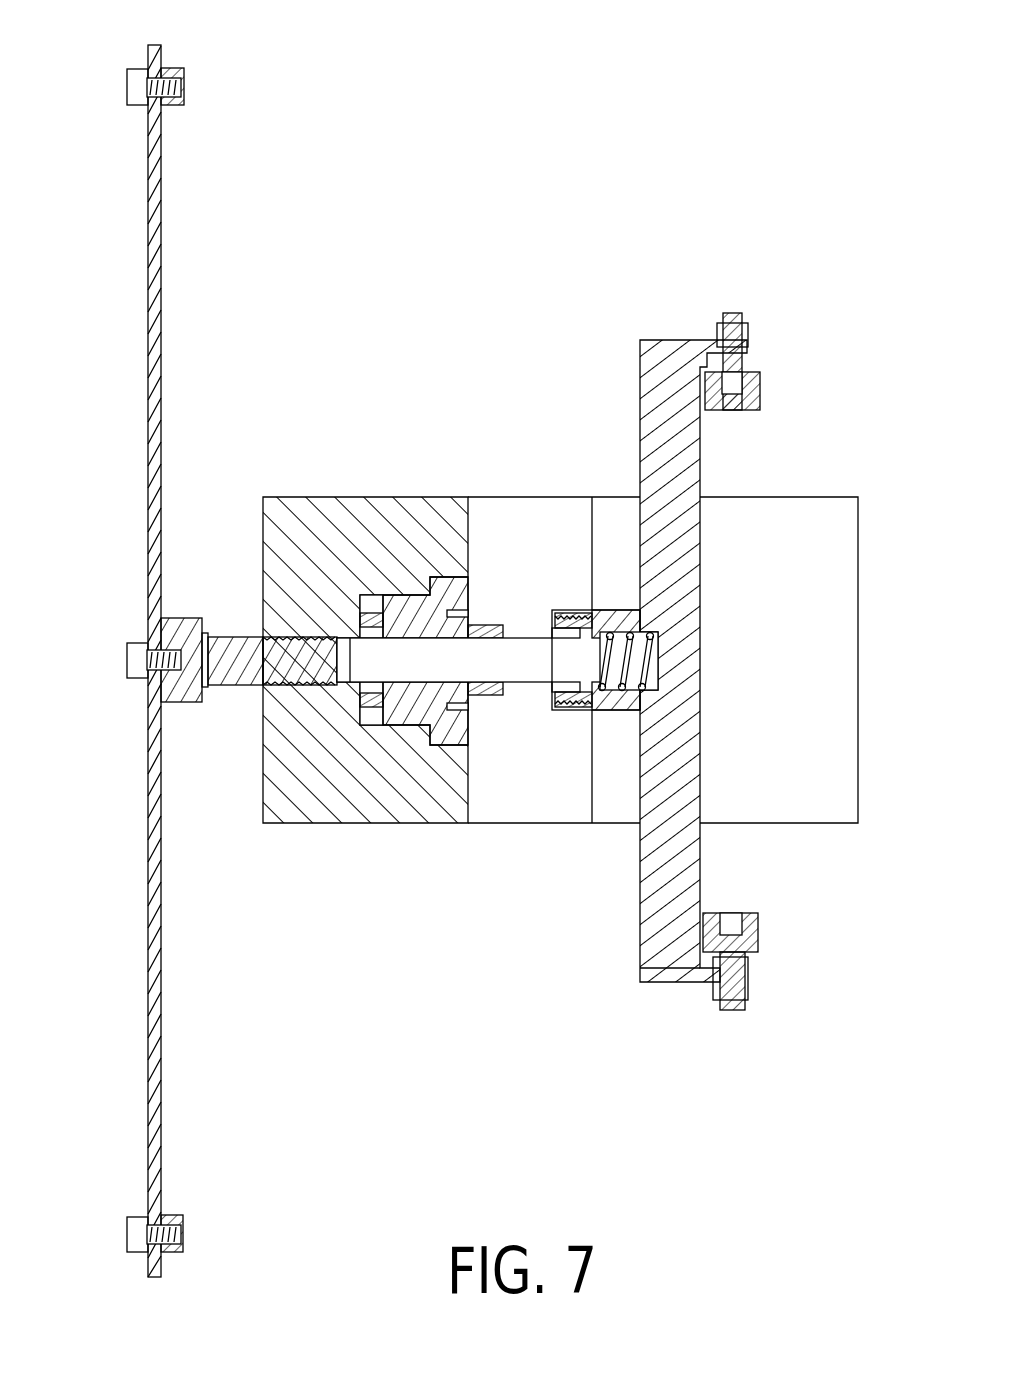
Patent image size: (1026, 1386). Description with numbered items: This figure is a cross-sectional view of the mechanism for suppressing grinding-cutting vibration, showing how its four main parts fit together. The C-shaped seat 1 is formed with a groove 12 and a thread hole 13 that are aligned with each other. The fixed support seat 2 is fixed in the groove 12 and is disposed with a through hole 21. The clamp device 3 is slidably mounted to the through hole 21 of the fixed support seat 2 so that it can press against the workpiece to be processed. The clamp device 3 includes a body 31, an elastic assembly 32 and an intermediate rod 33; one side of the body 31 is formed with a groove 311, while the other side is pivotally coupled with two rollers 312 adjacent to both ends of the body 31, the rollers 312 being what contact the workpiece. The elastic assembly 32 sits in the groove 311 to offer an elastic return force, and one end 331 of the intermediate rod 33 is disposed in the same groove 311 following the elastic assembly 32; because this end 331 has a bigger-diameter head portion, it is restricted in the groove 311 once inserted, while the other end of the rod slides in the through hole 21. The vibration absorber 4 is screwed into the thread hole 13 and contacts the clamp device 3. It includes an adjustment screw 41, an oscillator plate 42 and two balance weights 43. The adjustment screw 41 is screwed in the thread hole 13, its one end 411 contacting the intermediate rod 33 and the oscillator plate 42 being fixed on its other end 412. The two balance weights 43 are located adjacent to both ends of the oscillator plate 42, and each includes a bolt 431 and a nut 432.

The C-shaped seat 1 is at (852, 478).
The groove 12 is at (410, 727).
The thread hole 13 is at (296, 600).
The fixed support seat 2 is at (420, 590).
The through hole 21 is at (428, 717).
The clamp device 3 is at (692, 1053).
The body 31 is at (688, 460).
The groove 311 is at (630, 700).
The rollers 312 is at (760, 390).
The elastic assembly 32 is at (612, 636).
The intermediate rod 33 is at (528, 655).
The end 331 is at (352, 672).
The vibration absorber 4 is at (84, 558).
The adjustment screw 41 is at (238, 648).
The end 411 is at (322, 672).
The end 412 is at (160, 688).
The oscillator plate 42 is at (158, 878).
The balance weights 43 is at (148, 102).
The bolt 431 is at (137, 72).
The nut 432 is at (178, 75).